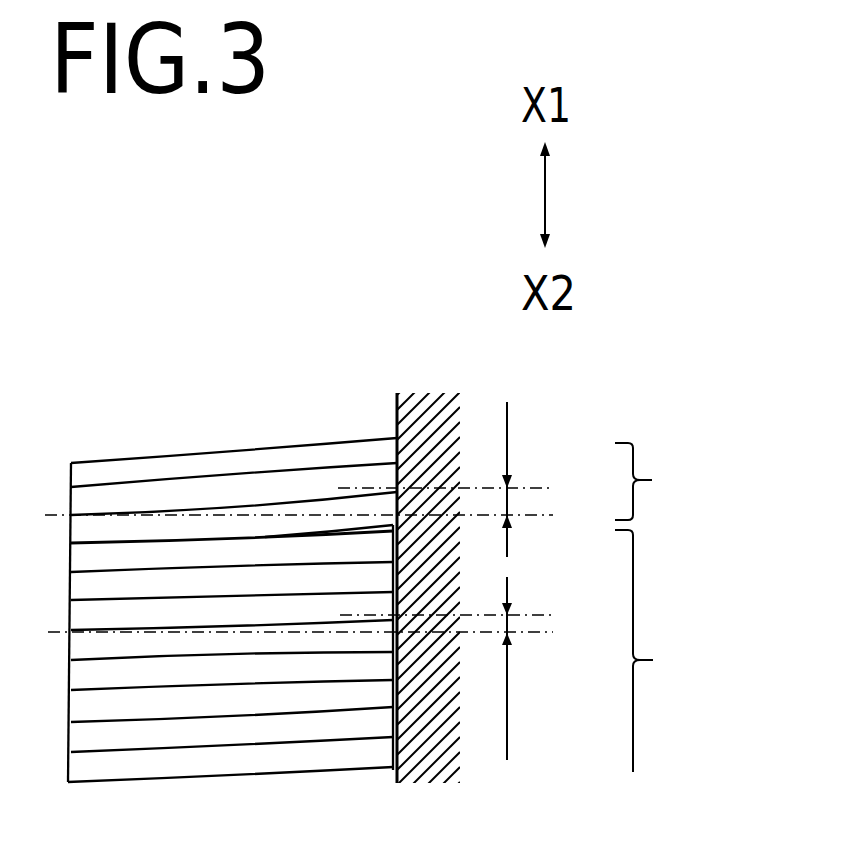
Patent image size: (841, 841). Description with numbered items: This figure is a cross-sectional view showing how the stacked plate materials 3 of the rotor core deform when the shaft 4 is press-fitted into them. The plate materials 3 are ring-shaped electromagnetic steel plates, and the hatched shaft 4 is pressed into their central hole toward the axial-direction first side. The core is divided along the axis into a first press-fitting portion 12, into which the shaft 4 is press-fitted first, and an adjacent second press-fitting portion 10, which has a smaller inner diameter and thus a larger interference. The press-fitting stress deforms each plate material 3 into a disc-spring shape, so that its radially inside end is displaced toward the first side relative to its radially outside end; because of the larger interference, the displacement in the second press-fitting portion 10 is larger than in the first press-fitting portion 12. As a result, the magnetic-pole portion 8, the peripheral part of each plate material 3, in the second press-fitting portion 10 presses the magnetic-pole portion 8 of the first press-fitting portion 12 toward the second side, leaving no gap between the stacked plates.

The plate material 3 is at (292, 452).
The shaft 4 is at (416, 393).
The magnetic-pole portion 8 is at (70, 463).
The second press-fitting portion 10 is at (385, 479).
The first press-fitting portion 12 is at (384, 651).